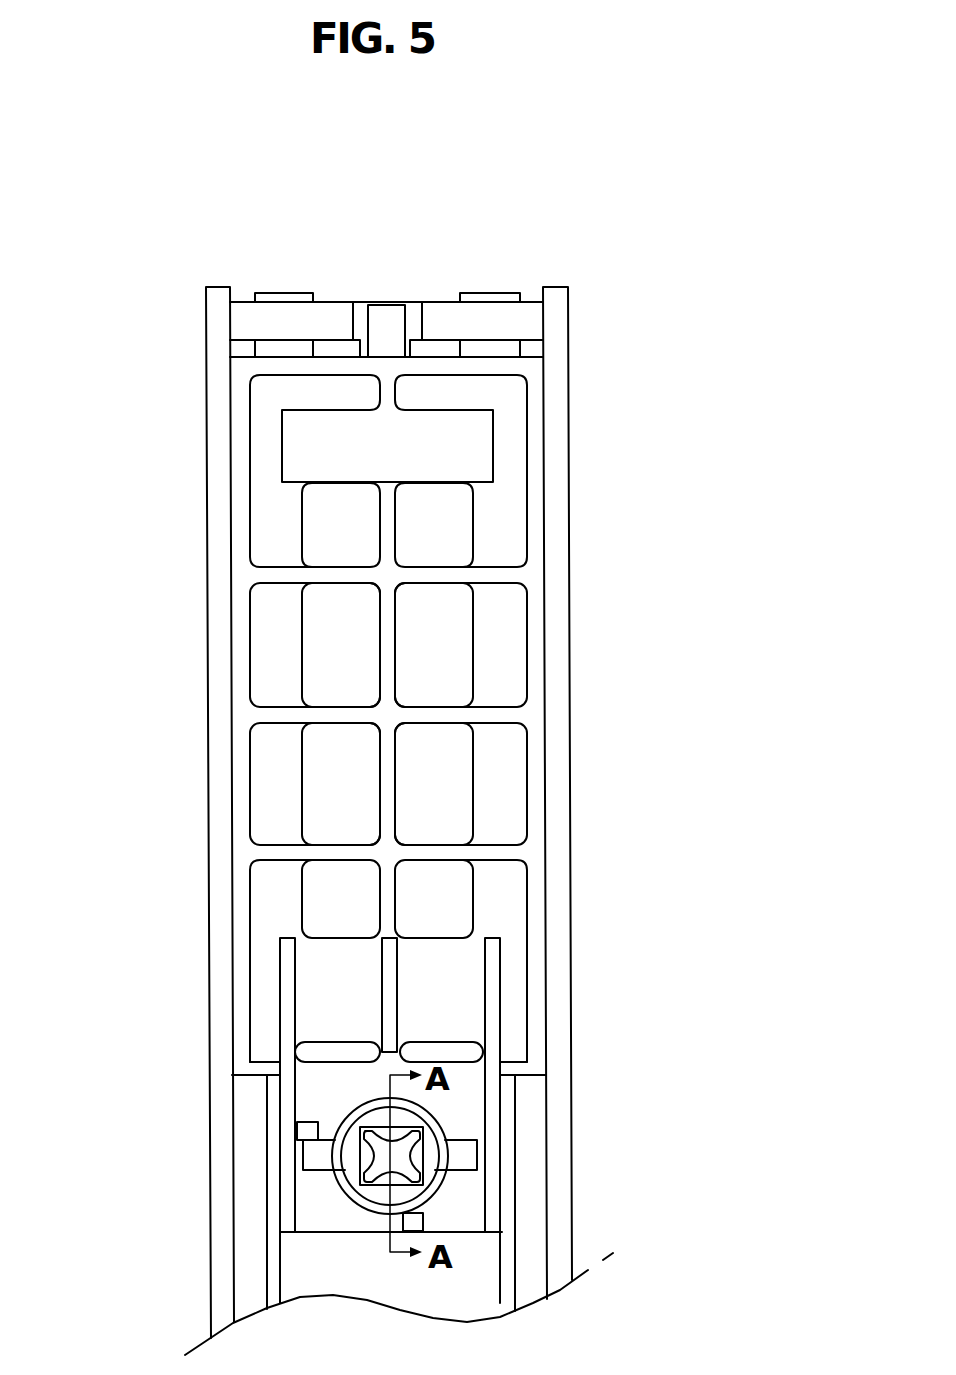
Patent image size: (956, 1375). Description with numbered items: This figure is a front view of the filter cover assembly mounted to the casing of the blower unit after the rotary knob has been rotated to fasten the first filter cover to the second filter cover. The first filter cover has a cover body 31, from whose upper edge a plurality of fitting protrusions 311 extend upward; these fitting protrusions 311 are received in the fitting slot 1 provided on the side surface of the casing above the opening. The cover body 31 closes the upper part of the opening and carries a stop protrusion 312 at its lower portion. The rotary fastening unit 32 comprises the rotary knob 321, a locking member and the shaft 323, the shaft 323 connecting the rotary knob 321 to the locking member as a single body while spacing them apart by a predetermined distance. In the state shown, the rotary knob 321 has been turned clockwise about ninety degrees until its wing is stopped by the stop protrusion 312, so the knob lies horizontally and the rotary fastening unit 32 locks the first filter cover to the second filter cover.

The fitting slot 1 is at (297, 318).
The fitting protrusion 311 is at (487, 348).
The cover body 31 is at (487, 650).
The rotary knob 321 is at (428, 1118).
The rotary fastening unit 32 is at (378, 1124).
The shaft 323 is at (375, 1144).
The stop protrusion 312 is at (424, 1219).